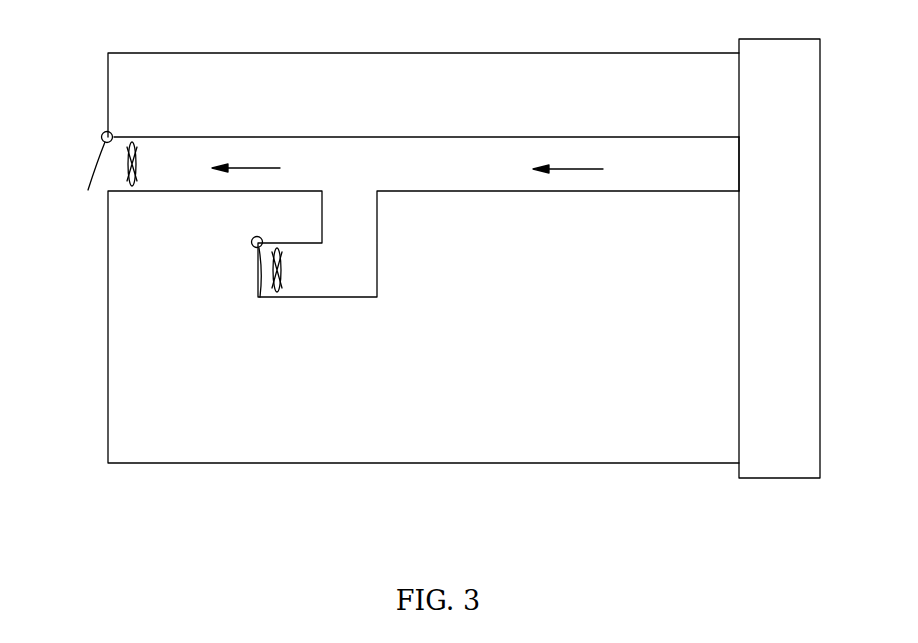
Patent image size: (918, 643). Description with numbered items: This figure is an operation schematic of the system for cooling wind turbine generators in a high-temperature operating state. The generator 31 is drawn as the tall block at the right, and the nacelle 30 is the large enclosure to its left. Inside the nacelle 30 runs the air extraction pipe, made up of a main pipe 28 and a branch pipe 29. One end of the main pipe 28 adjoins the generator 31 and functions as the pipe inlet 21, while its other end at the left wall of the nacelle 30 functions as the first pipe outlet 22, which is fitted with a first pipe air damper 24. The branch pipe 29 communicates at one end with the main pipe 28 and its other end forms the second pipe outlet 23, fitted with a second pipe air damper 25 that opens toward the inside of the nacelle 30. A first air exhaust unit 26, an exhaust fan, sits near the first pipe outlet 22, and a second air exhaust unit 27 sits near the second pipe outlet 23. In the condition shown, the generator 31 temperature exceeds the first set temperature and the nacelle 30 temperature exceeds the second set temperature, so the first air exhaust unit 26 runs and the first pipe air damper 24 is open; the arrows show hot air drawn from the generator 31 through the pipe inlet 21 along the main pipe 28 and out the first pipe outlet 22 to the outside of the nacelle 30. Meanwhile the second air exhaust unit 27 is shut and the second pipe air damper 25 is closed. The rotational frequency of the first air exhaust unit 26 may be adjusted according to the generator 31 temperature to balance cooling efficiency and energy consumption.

The pipe inlet 21 is at (738, 175).
The first pipe outlet 22 is at (110, 165).
The second pipe outlet 23 is at (260, 246).
The first pipe air damper 24 is at (92, 177).
The second pipe air damper 25 is at (257, 282).
The first air exhaust unit 26 is at (135, 145).
The second air exhaust unit 27 is at (285, 277).
The main pipe 28 is at (480, 147).
The branch pipe 29 is at (362, 228).
The nacelle 30 is at (453, 70).
The generator 31 is at (773, 52).